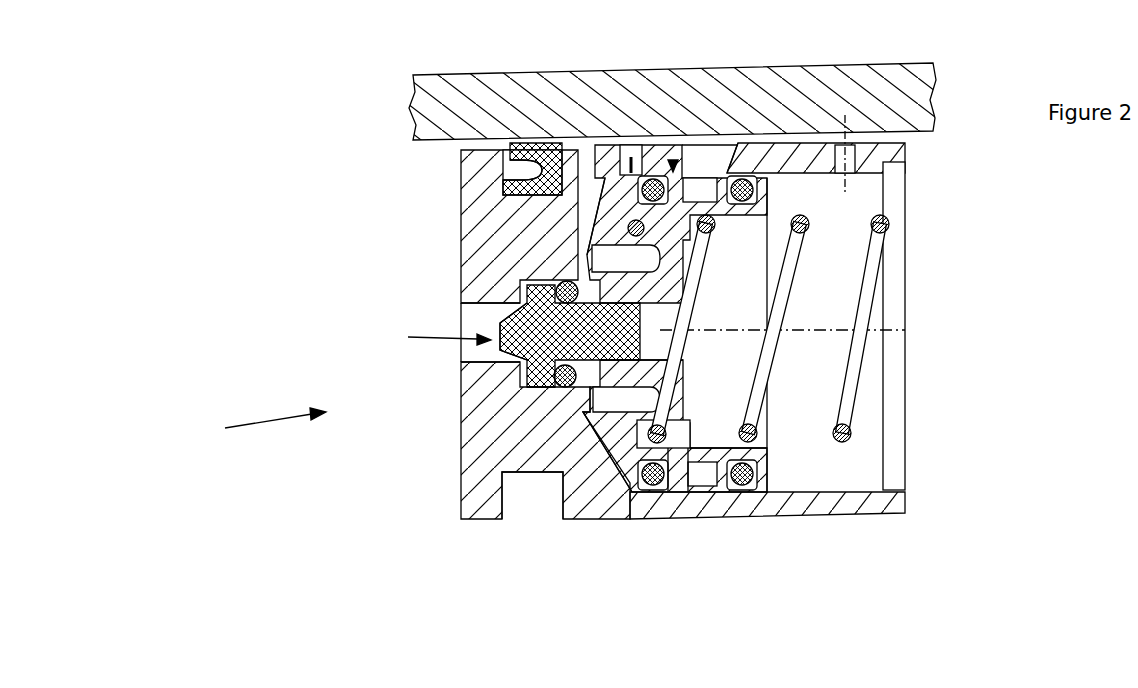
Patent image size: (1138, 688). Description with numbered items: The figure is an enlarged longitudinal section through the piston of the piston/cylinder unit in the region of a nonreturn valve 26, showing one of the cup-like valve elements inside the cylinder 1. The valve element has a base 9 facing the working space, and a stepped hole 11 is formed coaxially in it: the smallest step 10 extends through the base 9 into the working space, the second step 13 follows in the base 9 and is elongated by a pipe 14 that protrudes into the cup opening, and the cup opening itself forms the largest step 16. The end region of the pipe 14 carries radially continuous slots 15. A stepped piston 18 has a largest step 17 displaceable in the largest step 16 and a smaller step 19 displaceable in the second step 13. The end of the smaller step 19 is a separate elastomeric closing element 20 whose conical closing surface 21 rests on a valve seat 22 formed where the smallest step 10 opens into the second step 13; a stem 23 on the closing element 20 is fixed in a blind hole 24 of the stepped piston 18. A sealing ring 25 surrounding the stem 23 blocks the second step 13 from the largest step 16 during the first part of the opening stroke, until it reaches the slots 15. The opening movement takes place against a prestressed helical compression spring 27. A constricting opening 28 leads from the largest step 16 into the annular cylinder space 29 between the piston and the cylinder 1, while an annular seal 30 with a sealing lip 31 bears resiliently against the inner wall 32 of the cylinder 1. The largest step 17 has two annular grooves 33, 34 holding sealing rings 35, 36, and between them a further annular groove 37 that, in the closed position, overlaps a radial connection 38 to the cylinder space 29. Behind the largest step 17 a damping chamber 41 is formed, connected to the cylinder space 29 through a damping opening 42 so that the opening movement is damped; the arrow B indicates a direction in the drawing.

The cylinder 1 is at (430, 97).
The base 9 is at (475, 423).
The smallest step 10 is at (472, 322).
The stepped hole 11 is at (620, 455).
The second step 13 is at (552, 300).
The pipe 14 is at (592, 468).
The radially continuous slots 15 is at (636, 470).
The largest step 16 is at (615, 470).
The largest step of the stepped piston 17 is at (683, 470).
The stepped piston 18 is at (673, 165).
The smaller step 19 is at (468, 470).
The closing element 20 is at (470, 358).
The conical closing surface 21 is at (500, 363).
The valve seat 22 is at (510, 323).
The stem 23 is at (625, 180).
The blind hole 24 is at (585, 270).
The sealing ring 25 is at (556, 293).
The nonreturn valve 26 is at (470, 342).
The helical compression spring 27 is at (850, 390).
The constricting opening 28 is at (628, 156).
The annular cylinder space 29 is at (797, 140).
The annular seal 30 is at (538, 165).
The sealing lip 31 is at (511, 142).
The inner wall 32 is at (748, 160).
The annular groove 33 is at (663, 450).
The annular groove 34 is at (747, 483).
The sealing ring 35 is at (653, 488).
The sealing ring 36 is at (752, 480).
The annular groove 37 is at (700, 470).
The radial connection 38 is at (712, 482).
The damping chamber 41 is at (865, 457).
The damping opening 42 is at (846, 180).
The direction B is at (261, 422).